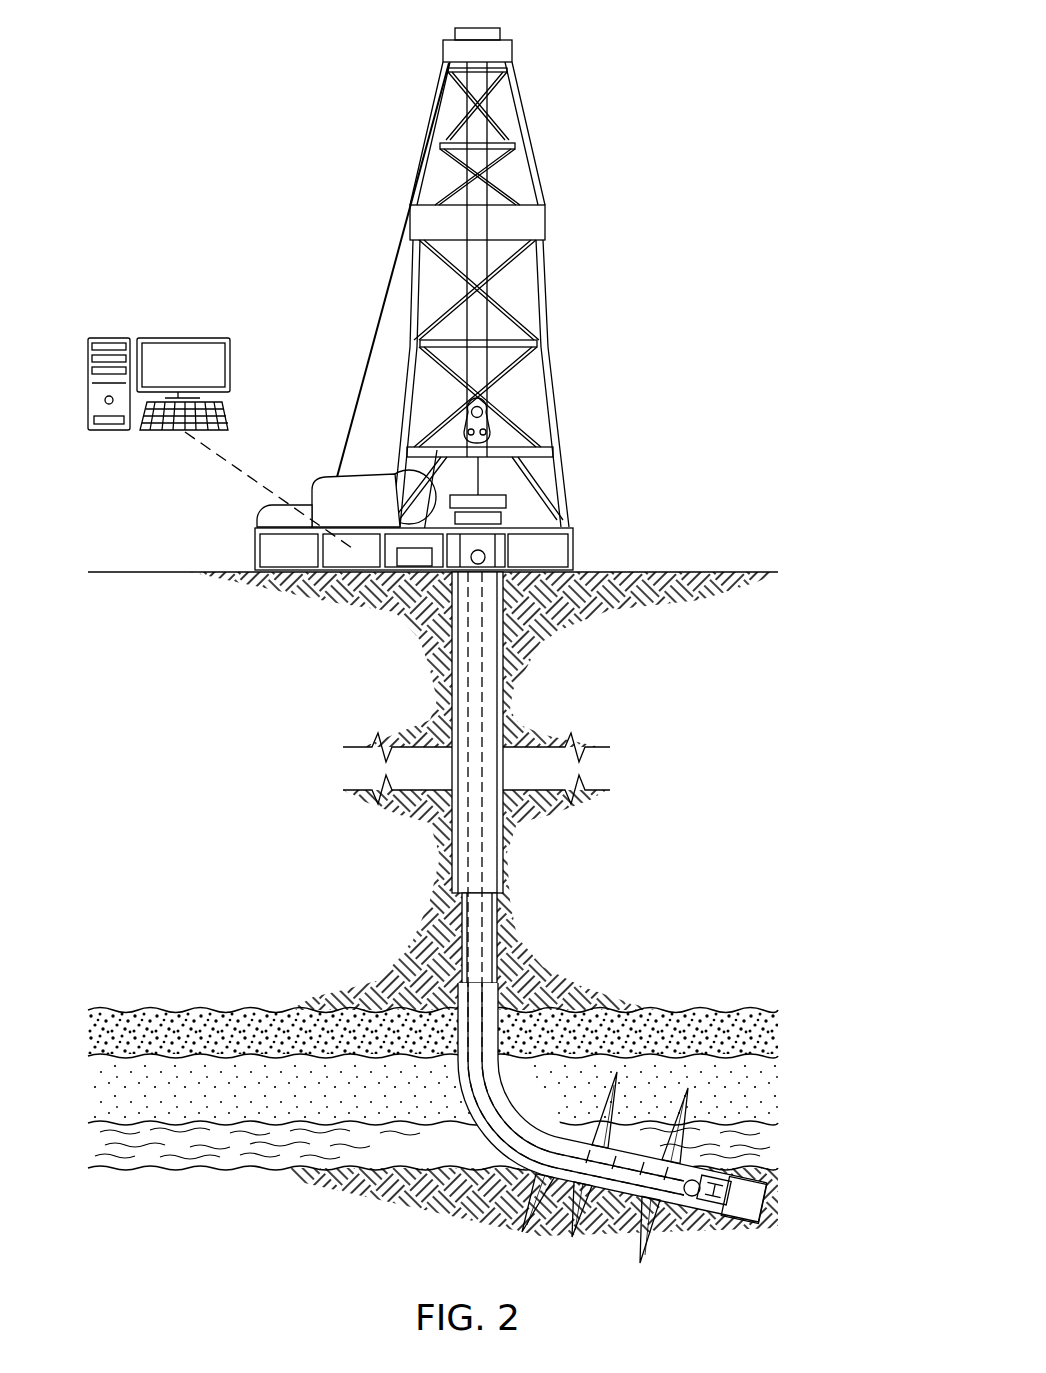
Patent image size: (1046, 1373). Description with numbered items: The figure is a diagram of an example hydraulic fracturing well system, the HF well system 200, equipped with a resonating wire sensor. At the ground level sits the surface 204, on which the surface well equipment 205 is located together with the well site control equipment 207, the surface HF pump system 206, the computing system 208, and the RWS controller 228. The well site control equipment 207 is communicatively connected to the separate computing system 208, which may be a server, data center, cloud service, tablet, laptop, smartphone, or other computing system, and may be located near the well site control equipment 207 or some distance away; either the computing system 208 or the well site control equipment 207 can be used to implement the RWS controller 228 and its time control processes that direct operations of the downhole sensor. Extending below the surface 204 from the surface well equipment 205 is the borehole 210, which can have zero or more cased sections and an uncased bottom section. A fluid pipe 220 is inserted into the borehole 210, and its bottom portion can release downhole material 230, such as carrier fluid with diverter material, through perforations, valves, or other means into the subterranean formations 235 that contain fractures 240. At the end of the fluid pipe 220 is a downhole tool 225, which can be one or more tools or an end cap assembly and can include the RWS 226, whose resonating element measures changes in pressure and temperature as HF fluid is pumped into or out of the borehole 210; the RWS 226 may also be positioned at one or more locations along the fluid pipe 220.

The HF well system 200 is at (320, 72).
The surface 204 is at (690, 572).
The surface well equipment 205 is at (527, 175).
The surface HF pump system 206 is at (486, 556).
The well site control equipment 207 is at (409, 470).
The computing system 208 is at (183, 338).
The borehole 210 is at (452, 717).
The fluid pipe 220 is at (458, 1072).
The downhole tool 225 is at (767, 1202).
The RWS 226 is at (750, 1228).
The RWS controller 228 is at (417, 570).
The downhole material 230 is at (498, 1048).
The subterranean formations 235 is at (704, 983).
The fractures 240 is at (678, 1258).